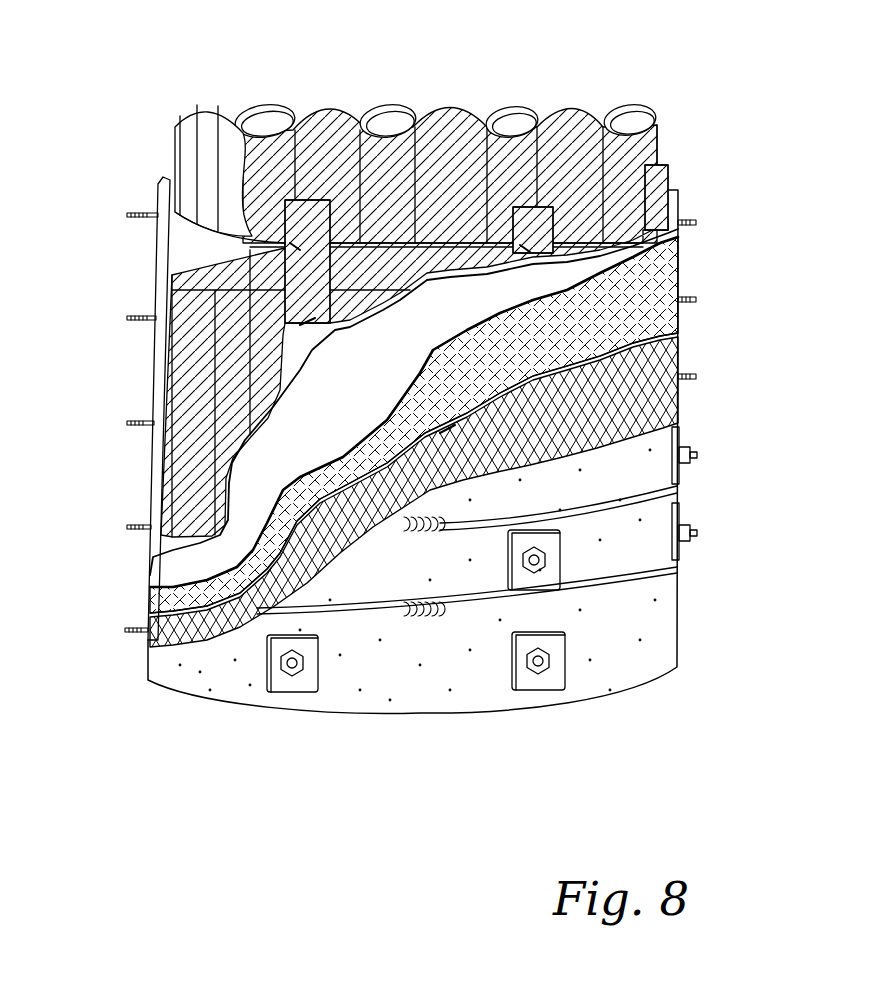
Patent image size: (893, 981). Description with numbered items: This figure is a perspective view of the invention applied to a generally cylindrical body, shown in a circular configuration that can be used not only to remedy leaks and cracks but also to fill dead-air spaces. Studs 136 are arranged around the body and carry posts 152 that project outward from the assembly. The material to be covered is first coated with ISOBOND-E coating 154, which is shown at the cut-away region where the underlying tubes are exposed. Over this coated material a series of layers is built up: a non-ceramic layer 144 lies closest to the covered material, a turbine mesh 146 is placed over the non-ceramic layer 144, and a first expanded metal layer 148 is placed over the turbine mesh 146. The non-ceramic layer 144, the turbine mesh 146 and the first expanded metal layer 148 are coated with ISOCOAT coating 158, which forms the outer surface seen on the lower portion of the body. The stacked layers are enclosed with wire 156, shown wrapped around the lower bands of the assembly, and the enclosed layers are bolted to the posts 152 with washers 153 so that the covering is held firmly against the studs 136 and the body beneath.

The studs 136 is at (157, 188).
The non-ceramic layer 144 is at (603, 250).
The turbine mesh 146 is at (676, 252).
The first expanded metal layer 148 is at (678, 353).
The posts 152 is at (682, 380).
The washers 153 is at (681, 512).
The ISOBOND-E coating 154 is at (242, 157).
The wire 156 is at (452, 608).
The ISOCOAT coating 158 is at (643, 650).